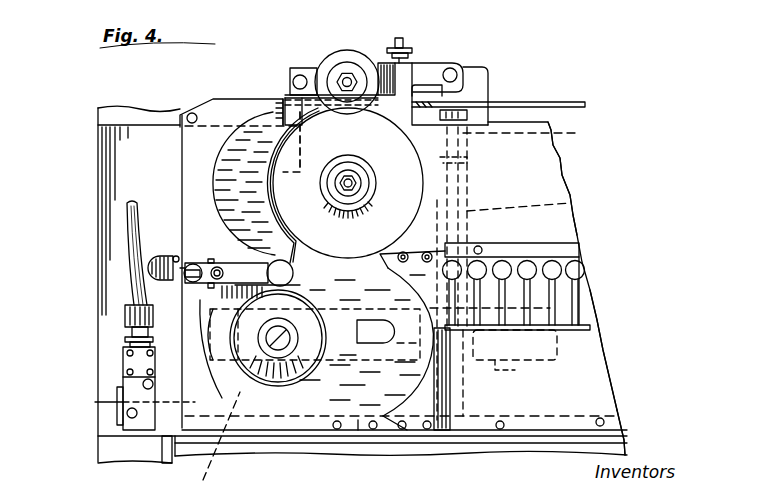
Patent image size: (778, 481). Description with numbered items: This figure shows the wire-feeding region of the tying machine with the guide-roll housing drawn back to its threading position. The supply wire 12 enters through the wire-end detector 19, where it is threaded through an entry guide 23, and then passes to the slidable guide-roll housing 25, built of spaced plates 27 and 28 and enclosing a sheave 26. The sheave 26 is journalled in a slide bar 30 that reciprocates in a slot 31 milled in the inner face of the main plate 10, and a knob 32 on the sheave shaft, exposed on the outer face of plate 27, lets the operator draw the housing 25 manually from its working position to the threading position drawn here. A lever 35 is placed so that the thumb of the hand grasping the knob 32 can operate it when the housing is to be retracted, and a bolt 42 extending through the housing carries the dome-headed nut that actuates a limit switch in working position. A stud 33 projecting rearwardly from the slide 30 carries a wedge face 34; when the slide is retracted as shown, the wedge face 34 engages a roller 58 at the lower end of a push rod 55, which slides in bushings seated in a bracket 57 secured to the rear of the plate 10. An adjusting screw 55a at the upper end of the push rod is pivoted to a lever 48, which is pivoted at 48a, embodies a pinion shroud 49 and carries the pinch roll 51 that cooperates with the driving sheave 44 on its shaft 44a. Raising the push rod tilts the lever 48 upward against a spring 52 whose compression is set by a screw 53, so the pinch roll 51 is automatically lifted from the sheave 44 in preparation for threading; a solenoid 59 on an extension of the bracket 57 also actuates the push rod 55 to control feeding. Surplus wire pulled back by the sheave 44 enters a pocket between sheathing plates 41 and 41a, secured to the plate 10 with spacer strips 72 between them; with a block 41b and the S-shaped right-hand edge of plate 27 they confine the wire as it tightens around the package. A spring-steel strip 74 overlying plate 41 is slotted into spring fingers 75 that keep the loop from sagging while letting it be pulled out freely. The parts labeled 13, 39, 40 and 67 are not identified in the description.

The plate 10 is at (560, 188).
The wire 12 is at (585, 94).
The base plate 13 is at (610, 394).
The wire-end detector 19 is at (130, 382).
The entry guide 23 is at (123, 412).
The slidable guide-roll housing 25 is at (238, 264).
The sheave 26 is at (220, 390).
The plate 27 is at (248, 98).
The plate 28 is at (210, 150).
The slide bar 30 is at (458, 379).
The slot 31 is at (514, 369).
The knob 32 is at (258, 372).
The stud 33 is at (515, 343).
The wedge face 34 is at (416, 307).
The lever 35 is at (240, 278).
The spring 39 is at (188, 285).
The knob 40 is at (170, 254).
The sheathing plate 41 is at (412, 266).
The sheathing plate 41a is at (411, 401).
The block 41b is at (468, 410).
The bolt 42 is at (195, 113).
The sheave 44 is at (348, 183).
The shaft 44a is at (349, 178).
The lever 48 is at (455, 64).
The pivot bearing 48a is at (300, 78).
The pinion shroud 49 is at (330, 54).
The pinch roll 51 is at (352, 73).
The spring 52 is at (413, 66).
The screw 53 is at (403, 40).
The push rod 55 is at (570, 203).
The adjusting screw 55a is at (577, 134).
The bracket 57 is at (467, 197).
The roller 58 is at (497, 257).
The solenoid 59 is at (488, 80).
The belt 67 is at (407, 118).
The spacer strips 72 is at (620, 416).
The strip 74 is at (580, 306).
The spring fingers 75 is at (563, 292).